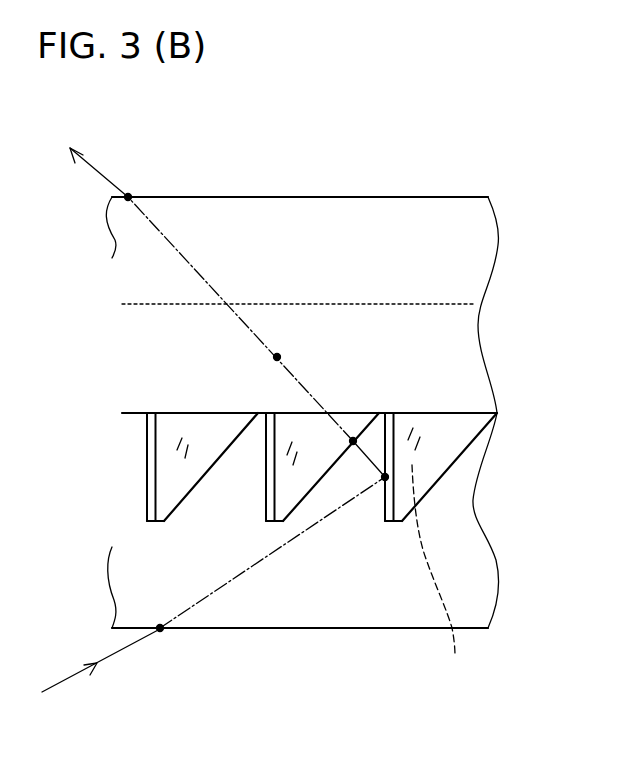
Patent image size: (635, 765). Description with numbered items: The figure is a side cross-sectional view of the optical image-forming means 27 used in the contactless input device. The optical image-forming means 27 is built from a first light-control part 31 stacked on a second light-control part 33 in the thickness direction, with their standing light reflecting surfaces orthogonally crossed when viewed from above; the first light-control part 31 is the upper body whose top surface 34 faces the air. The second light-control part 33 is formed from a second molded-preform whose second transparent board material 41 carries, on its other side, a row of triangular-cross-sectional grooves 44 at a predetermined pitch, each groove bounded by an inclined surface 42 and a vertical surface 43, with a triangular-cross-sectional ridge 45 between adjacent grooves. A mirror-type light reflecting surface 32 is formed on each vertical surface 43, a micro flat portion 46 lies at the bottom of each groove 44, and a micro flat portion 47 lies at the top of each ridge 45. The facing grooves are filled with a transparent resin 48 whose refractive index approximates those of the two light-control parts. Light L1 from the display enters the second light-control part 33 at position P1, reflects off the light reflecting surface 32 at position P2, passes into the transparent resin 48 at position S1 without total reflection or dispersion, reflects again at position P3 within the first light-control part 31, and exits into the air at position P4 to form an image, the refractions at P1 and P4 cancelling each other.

The optical image-forming means 27 is at (476, 139).
The first light-control part 31 is at (307, 300).
The light exit surface 34 is at (462, 242).
The second transparent board material 41 is at (472, 598).
The second light-control part 33 is at (0, 523).
The transparent resin 48 is at (296, 519).
The vertical surface 43 is at (152, 450).
The inclined surface 42 is at (236, 437).
The light reflecting surface 32 is at (260, 497).
The micro flat portion 46 is at (397, 524).
The micro flat portion 47 is at (385, 413).
The triangular-cross-sectional ridge 45 is at (235, 478).
The triangular-cross-sectional groove 44 is at (445, 583).
The light L1 is at (80, 672).
The position P1 is at (160, 632).
The position P2 is at (384, 475).
The position S1 is at (353, 438).
The position P3 is at (278, 355).
The position P4 is at (128, 195).